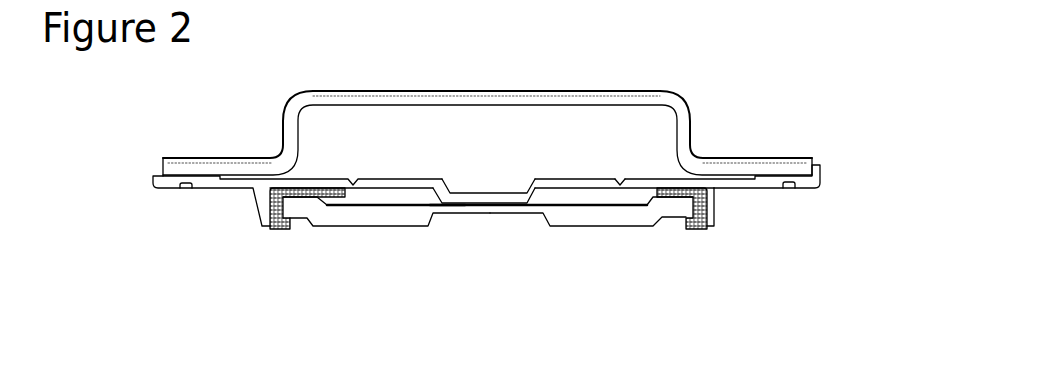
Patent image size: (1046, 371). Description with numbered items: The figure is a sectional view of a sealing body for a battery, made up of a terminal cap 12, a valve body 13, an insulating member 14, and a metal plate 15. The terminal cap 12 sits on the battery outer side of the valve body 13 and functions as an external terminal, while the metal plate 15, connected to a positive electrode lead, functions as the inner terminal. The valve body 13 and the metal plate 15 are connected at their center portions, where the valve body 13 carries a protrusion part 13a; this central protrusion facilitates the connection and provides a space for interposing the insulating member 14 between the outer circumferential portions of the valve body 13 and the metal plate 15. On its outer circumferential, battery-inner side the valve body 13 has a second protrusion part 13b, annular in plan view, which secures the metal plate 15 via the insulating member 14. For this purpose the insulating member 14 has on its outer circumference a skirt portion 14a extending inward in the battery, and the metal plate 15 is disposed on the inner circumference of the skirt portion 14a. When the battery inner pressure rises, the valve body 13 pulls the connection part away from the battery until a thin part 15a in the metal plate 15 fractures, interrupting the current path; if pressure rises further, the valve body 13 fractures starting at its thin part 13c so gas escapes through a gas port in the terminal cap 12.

The terminal cap 12 is at (587, 100).
The valve body 13 is at (767, 183).
The protrusion part 13a is at (495, 211).
The protrusion part 13b is at (716, 210).
The thin part 13c is at (623, 170).
The insulating member 14 is at (668, 198).
The skirt portion 14a is at (689, 222).
The metal plate 15 is at (373, 215).
The thin part 15a is at (446, 214).